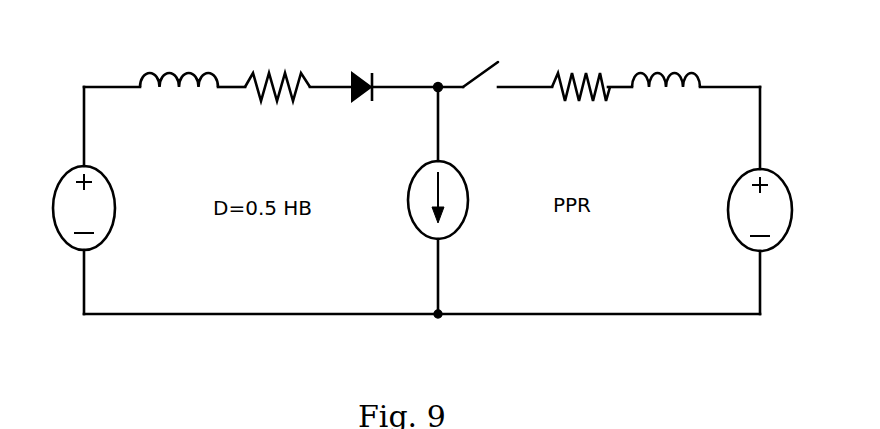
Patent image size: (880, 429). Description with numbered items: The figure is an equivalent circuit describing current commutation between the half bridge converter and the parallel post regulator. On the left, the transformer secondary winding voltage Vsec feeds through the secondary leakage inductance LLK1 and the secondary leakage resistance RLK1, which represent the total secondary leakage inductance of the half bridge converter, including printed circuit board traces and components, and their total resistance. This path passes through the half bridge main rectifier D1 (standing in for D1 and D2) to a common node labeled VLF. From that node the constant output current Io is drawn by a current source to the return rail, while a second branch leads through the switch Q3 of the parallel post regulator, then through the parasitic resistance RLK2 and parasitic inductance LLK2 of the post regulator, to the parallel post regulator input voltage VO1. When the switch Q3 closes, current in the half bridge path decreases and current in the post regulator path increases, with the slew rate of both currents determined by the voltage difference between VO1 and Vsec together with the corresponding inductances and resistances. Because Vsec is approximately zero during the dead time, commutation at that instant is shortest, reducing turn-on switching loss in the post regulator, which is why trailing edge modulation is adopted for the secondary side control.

The secondary leakage inductance LLK1 is at (179, 105).
The secondary leakage resistance RLK1 is at (277, 105).
The half bridge main rectifier D1 is at (369, 107).
The low-frequency node voltage V_LF VLF is at (432, 74).
The switch Q3 is at (480, 98).
The parasitic resistance of parallel post regulator RLK2 is at (581, 107).
The parasitic inductance of parallel post regulator LLK2 is at (666, 108).
The transformer secondary winding voltage Vsec is at (111, 216).
The constant output current Io is at (422, 200).
The parallel post regulator input voltage VO1 is at (739, 216).